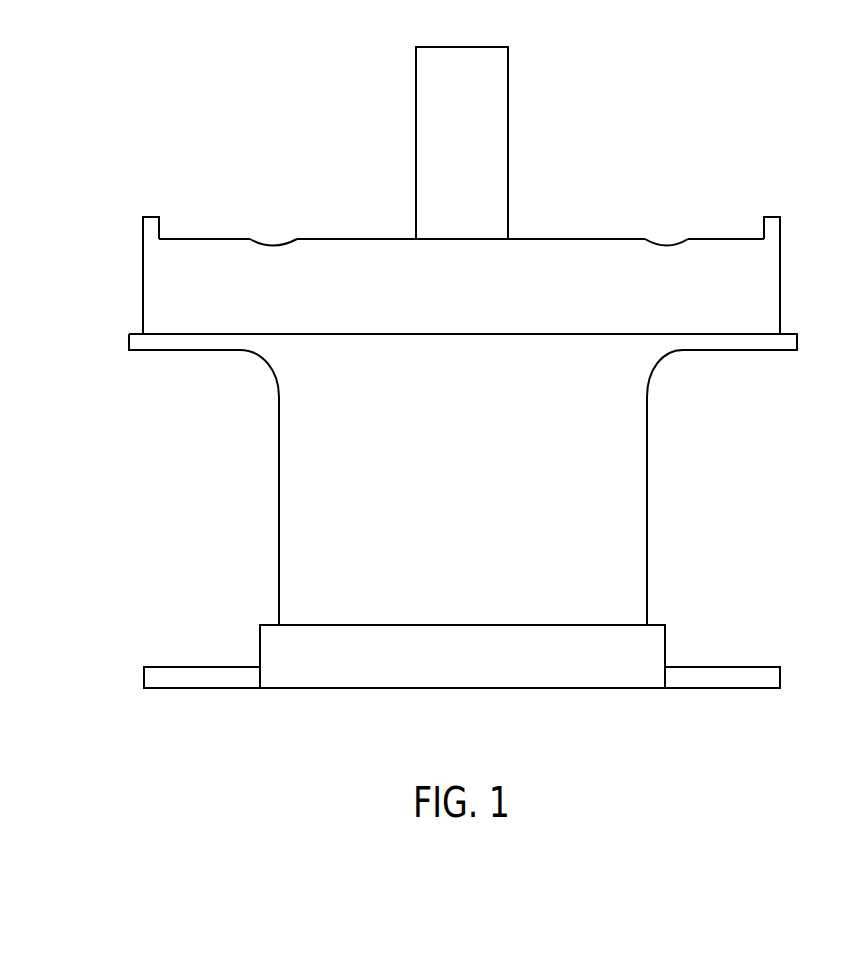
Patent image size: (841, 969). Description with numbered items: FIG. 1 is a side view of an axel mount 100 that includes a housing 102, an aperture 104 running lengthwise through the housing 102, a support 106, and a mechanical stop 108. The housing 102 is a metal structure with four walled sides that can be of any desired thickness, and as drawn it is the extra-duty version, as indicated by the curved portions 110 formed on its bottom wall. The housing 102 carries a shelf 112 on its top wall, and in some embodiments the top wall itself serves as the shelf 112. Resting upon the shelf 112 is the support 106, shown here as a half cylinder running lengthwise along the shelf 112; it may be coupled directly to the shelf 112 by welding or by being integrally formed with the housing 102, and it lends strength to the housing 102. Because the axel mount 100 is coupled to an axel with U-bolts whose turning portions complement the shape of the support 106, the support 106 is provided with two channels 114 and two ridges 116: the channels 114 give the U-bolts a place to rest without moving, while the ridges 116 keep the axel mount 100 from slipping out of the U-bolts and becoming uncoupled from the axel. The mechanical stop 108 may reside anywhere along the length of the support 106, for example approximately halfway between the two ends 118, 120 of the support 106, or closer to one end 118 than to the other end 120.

The axel mount 100 is at (718, 76).
The housing 102 is at (292, 555).
The aperture 104 is at (712, 447).
The support 106 is at (162, 297).
The mechanical stop 108 is at (500, 70).
The curved portions 110 is at (610, 676).
The shelf 112 is at (757, 346).
The channels 114 is at (273, 232).
The ridges 116 is at (153, 221).
The end 118 is at (738, 536).
The end 120 is at (192, 457).